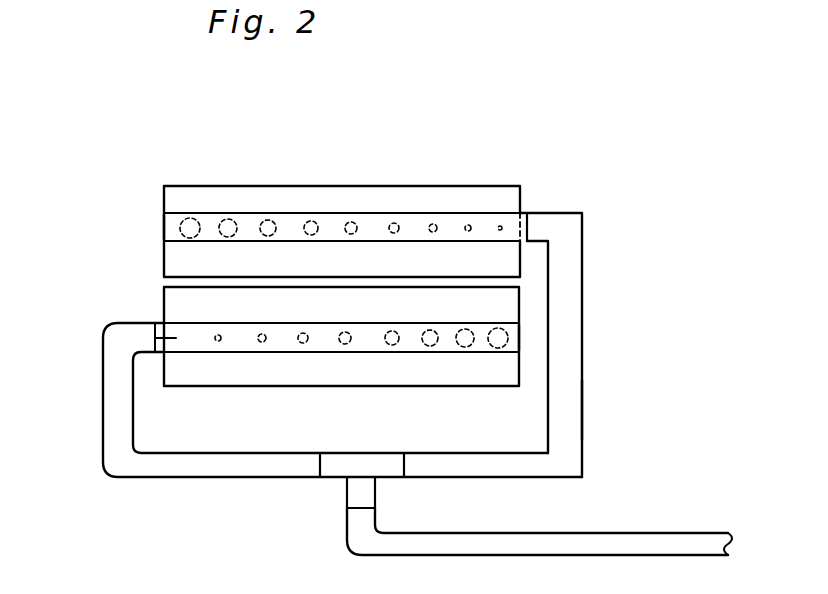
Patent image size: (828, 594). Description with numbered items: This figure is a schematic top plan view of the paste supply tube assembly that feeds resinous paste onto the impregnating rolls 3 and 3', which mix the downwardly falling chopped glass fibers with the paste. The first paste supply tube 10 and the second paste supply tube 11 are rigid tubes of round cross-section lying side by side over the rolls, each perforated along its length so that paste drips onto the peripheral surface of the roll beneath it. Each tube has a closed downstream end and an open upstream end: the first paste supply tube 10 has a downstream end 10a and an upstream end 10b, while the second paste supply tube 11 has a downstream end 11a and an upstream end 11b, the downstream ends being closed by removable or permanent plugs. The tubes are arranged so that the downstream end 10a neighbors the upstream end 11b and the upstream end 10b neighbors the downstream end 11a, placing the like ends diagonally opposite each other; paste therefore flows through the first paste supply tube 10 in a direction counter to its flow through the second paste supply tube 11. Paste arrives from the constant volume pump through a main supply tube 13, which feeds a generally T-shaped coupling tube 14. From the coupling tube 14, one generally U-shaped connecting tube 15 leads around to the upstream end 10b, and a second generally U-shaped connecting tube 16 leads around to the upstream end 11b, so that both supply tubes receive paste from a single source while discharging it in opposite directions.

The impregnating roll 3 is at (342, 209).
The impregnating roll 3' is at (307, 332).
The second paste supply tube 11 is at (477, 225).
The downstream end of second paste supply tube 11a is at (164, 229).
The upstream end of second paste supply tube 11b is at (527, 225).
The first paste supply tube 10 is at (447, 343).
The downstream end of first paste supply tube 10a is at (520, 333).
The upstream end of first paste supply tube 10b is at (166, 338).
The main supply tube 13 is at (558, 538).
The coupling tube 14 is at (357, 462).
The connecting tube 15 is at (172, 465).
The connecting tube 16 is at (572, 410).